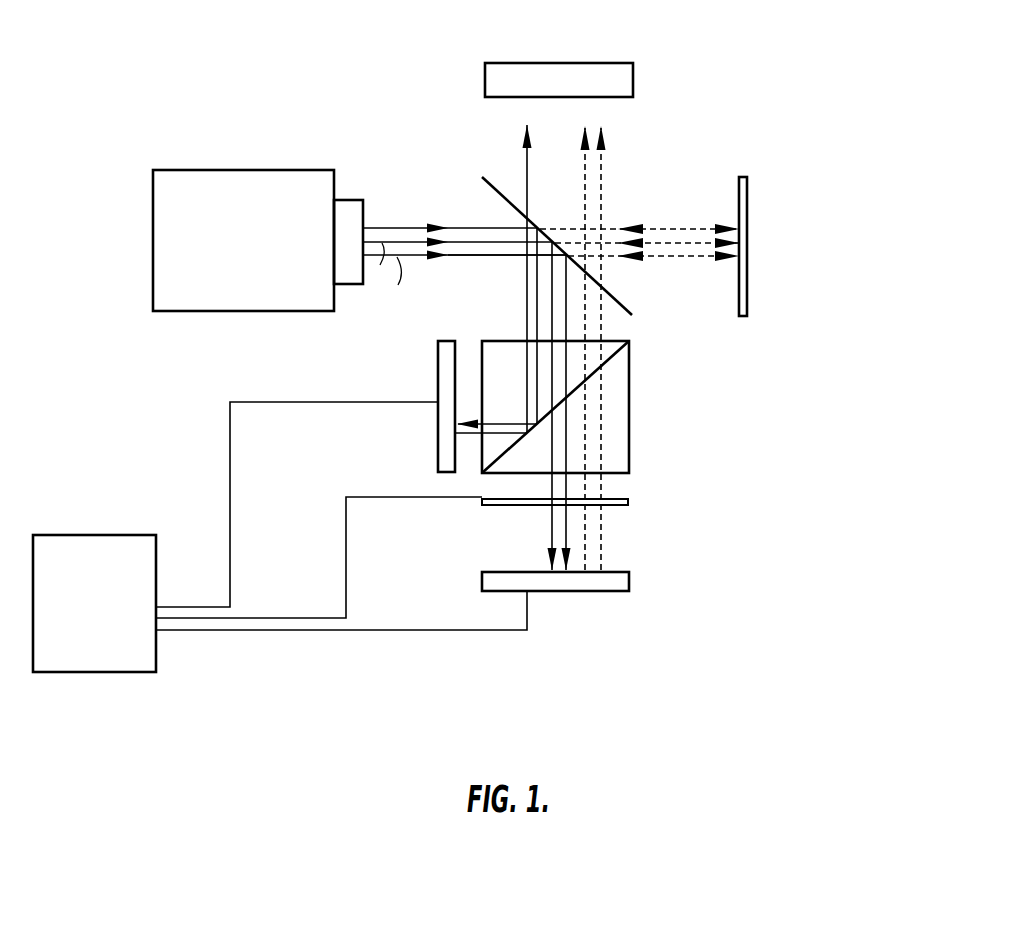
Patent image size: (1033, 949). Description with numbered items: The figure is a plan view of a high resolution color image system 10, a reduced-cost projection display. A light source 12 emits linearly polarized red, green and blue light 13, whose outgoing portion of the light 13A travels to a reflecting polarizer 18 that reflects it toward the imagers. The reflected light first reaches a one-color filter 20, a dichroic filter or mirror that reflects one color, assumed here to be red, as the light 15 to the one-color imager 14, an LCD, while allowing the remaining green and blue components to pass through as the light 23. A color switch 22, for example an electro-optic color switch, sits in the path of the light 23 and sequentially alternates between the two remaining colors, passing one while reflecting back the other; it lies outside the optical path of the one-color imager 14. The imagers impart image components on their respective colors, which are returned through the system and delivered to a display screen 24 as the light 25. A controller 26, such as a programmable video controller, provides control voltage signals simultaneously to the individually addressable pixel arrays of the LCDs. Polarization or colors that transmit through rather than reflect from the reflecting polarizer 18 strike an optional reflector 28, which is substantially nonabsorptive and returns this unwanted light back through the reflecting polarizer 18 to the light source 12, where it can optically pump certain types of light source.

The high resolution color image system 10 is at (750, 125).
The light source 12 is at (240, 170).
The light 13 is at (420, 215).
The outgoing portion of the light 13A is at (488, 257).
The one-color imager 14 is at (437, 457).
The light 15 is at (470, 440).
The reflecting polarizer 18 is at (622, 303).
The one-color filter 20 is at (613, 362).
The color switch 22 is at (628, 498).
The light 23 is at (602, 543).
The display screen 24 is at (578, 63).
The light 25 is at (613, 167).
The controller 26 is at (128, 672).
The reflector 28 is at (748, 212).